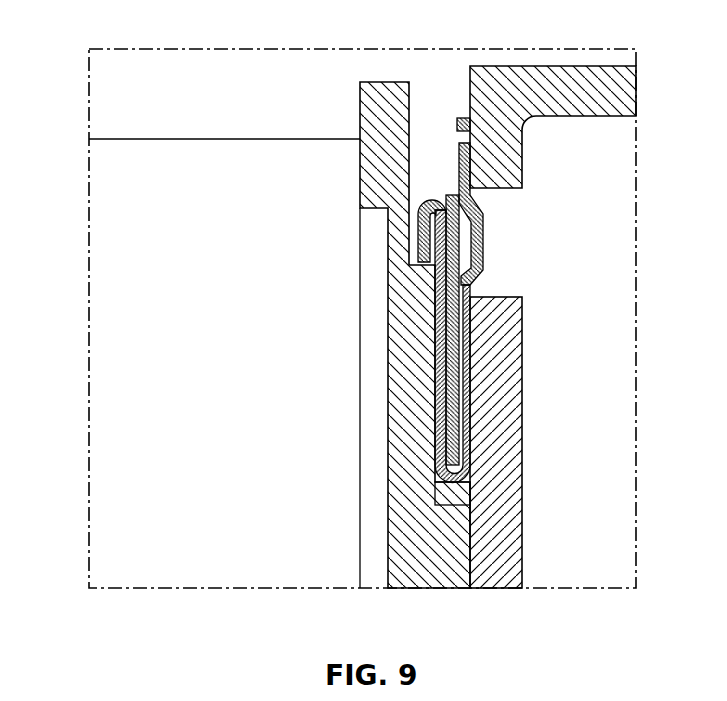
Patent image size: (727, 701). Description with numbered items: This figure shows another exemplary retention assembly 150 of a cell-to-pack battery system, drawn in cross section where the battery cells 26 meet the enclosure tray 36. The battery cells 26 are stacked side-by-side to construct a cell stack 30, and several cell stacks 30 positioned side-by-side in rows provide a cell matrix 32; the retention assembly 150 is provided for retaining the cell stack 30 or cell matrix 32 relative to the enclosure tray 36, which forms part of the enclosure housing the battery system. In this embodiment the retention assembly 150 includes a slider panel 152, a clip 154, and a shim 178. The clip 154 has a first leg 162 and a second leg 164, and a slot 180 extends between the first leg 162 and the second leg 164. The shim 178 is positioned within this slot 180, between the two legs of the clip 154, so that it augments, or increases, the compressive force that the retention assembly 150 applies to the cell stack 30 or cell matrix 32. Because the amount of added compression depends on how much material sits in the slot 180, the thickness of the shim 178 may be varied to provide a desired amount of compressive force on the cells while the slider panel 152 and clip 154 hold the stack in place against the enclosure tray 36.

The battery cells 26 is at (102, 422).
The cell stack 30 is at (224, 95).
The cell matrix 32 is at (202, 122).
The enclosure tray 36 is at (570, 82).
The retention assembly 150 is at (448, 525).
The slider panel 152 is at (397, 522).
The clip 154 is at (480, 408).
The first leg 162 is at (437, 410).
The second leg 164 is at (463, 431).
The shim 178 is at (452, 235).
The slot 180 is at (453, 470).